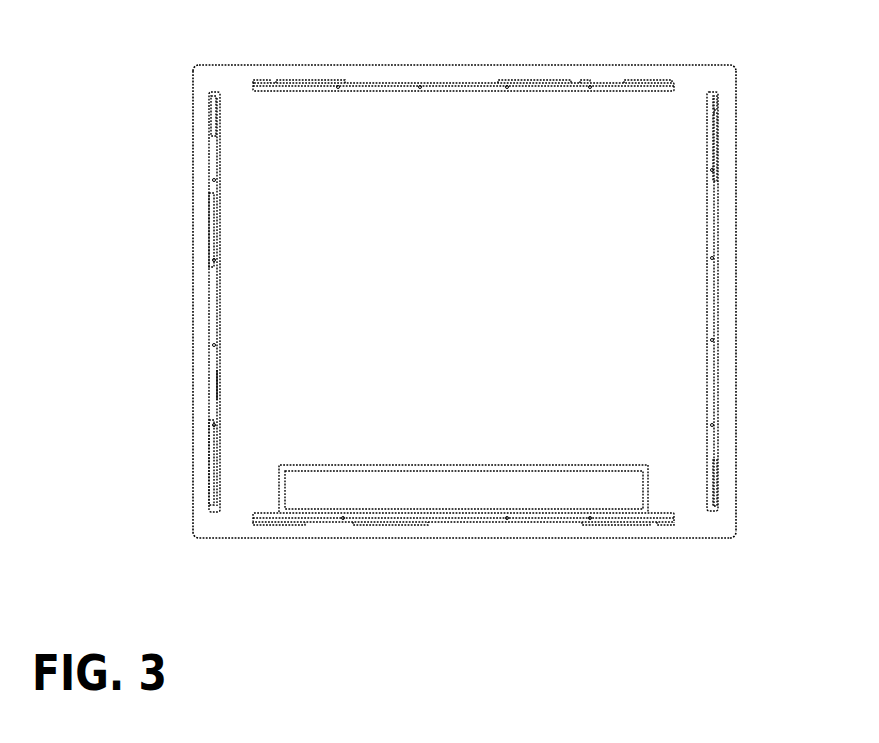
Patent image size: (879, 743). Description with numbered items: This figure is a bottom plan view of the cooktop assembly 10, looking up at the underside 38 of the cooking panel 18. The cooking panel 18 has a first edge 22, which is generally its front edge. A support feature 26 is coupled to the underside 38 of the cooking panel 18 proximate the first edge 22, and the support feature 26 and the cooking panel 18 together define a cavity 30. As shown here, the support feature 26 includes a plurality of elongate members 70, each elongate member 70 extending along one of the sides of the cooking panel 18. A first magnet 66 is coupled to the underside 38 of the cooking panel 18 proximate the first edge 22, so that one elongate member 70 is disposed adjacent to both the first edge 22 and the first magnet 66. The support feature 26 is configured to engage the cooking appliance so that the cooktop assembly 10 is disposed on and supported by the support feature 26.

The cooktop assembly 10 is at (508, 311).
The cooking panel 18 is at (192, 207).
The first edge 22 is at (298, 538).
The support feature 26 is at (730, 480).
The cavity 30 is at (236, 380).
The underside 38 is at (603, 170).
The first magnet 66 is at (283, 491).
The elongate members 70 is at (404, 90).